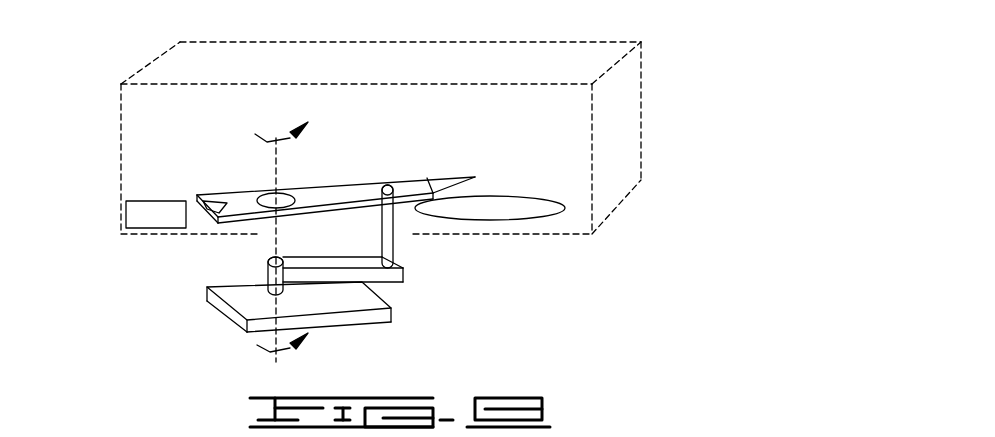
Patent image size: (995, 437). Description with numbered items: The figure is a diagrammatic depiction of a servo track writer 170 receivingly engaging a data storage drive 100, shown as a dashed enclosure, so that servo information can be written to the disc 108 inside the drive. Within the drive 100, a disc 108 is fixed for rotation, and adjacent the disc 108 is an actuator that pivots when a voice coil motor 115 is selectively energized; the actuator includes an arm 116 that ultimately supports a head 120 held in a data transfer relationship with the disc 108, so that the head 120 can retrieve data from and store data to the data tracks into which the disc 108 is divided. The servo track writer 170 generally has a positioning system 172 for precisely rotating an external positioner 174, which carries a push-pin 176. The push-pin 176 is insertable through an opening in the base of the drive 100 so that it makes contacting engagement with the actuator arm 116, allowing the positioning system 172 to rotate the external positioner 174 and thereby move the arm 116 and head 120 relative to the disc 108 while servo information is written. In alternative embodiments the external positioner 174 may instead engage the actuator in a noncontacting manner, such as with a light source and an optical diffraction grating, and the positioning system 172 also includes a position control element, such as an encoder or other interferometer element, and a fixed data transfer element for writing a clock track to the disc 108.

The drive 100 is at (635, 227).
The disc 108 is at (537, 197).
The voice coil motor 115 is at (138, 201).
The arm 116 is at (362, 180).
The head 120 is at (473, 177).
The servo track writer 170 is at (381, 276).
The positioning system 172 is at (350, 325).
The external positioner 174 is at (403, 272).
The push-pin 176 is at (398, 232).